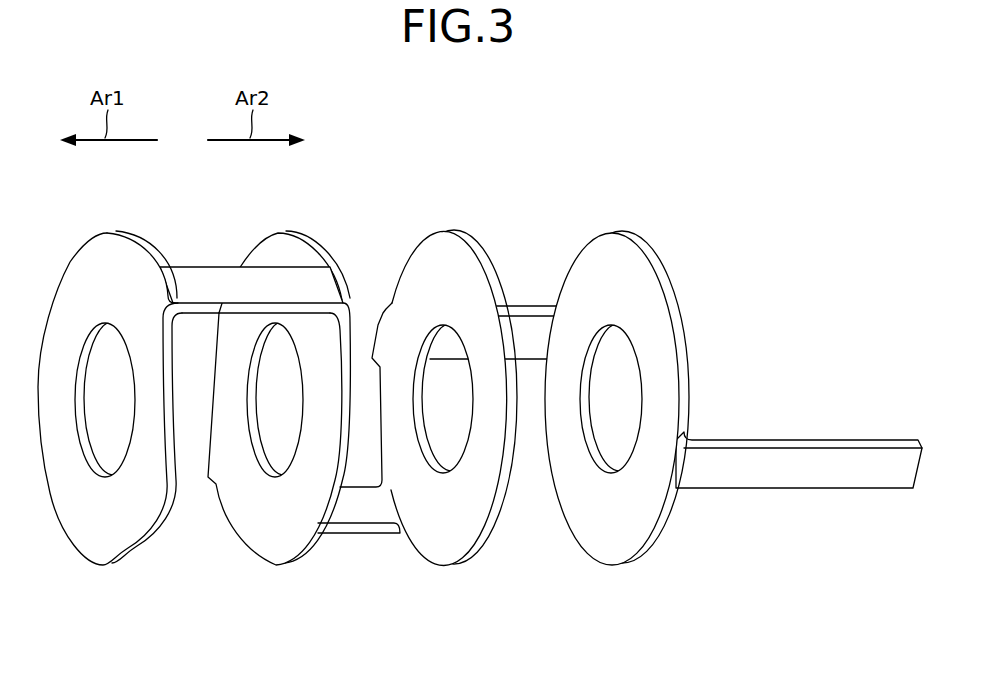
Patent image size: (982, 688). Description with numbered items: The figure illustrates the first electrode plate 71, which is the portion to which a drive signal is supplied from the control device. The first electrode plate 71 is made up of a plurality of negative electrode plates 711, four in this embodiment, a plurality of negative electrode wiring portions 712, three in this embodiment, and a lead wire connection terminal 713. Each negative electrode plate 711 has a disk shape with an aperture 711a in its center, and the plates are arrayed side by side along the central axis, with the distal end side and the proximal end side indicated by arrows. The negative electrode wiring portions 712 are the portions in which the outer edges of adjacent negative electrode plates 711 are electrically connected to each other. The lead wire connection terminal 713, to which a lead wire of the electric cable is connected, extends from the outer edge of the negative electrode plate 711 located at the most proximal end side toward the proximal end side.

The first electrode plate 71 is at (631, 136).
The negative electrode plate 711 is at (98, 540).
The aperture 711a is at (95, 446).
The negative electrode wiring portion 712 is at (207, 283).
The lead wire connection terminal 713 is at (808, 467).